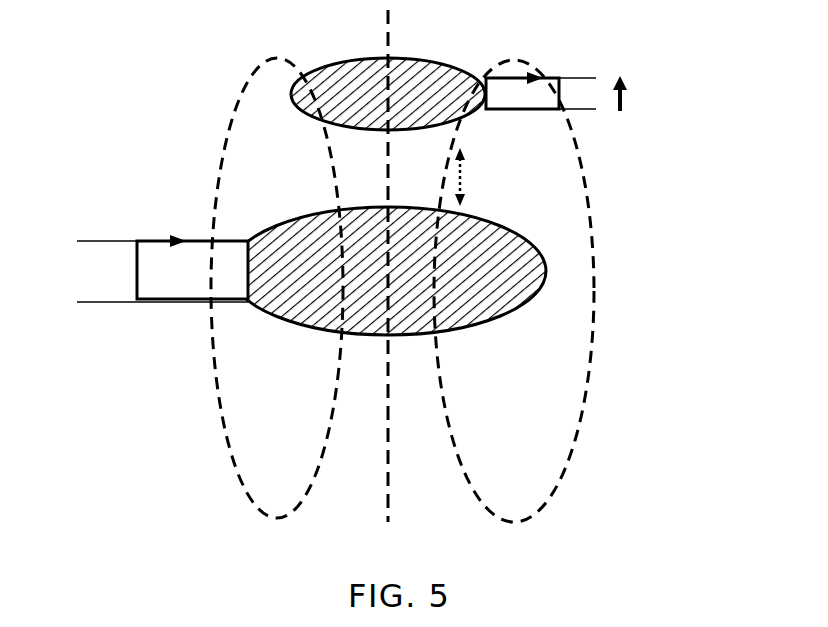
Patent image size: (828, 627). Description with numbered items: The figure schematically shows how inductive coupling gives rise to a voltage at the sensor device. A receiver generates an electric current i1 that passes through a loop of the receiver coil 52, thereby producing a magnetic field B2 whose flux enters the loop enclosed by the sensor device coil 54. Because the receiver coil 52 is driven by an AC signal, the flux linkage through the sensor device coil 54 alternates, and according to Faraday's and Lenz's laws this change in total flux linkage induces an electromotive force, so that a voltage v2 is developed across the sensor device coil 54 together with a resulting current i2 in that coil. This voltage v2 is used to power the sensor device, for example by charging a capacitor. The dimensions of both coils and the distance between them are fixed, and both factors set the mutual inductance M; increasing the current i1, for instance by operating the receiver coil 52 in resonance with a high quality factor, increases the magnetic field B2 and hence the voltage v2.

The receiver coil 52 is at (546, 256).
The sensor device coil 54 is at (290, 95).
The electric current i1 is at (162, 244).
The second current i2 is at (541, 69).
The magnetic field B2 is at (402, 264).
The voltage v2 is at (638, 99).
The mutual inductance M is at (489, 177).